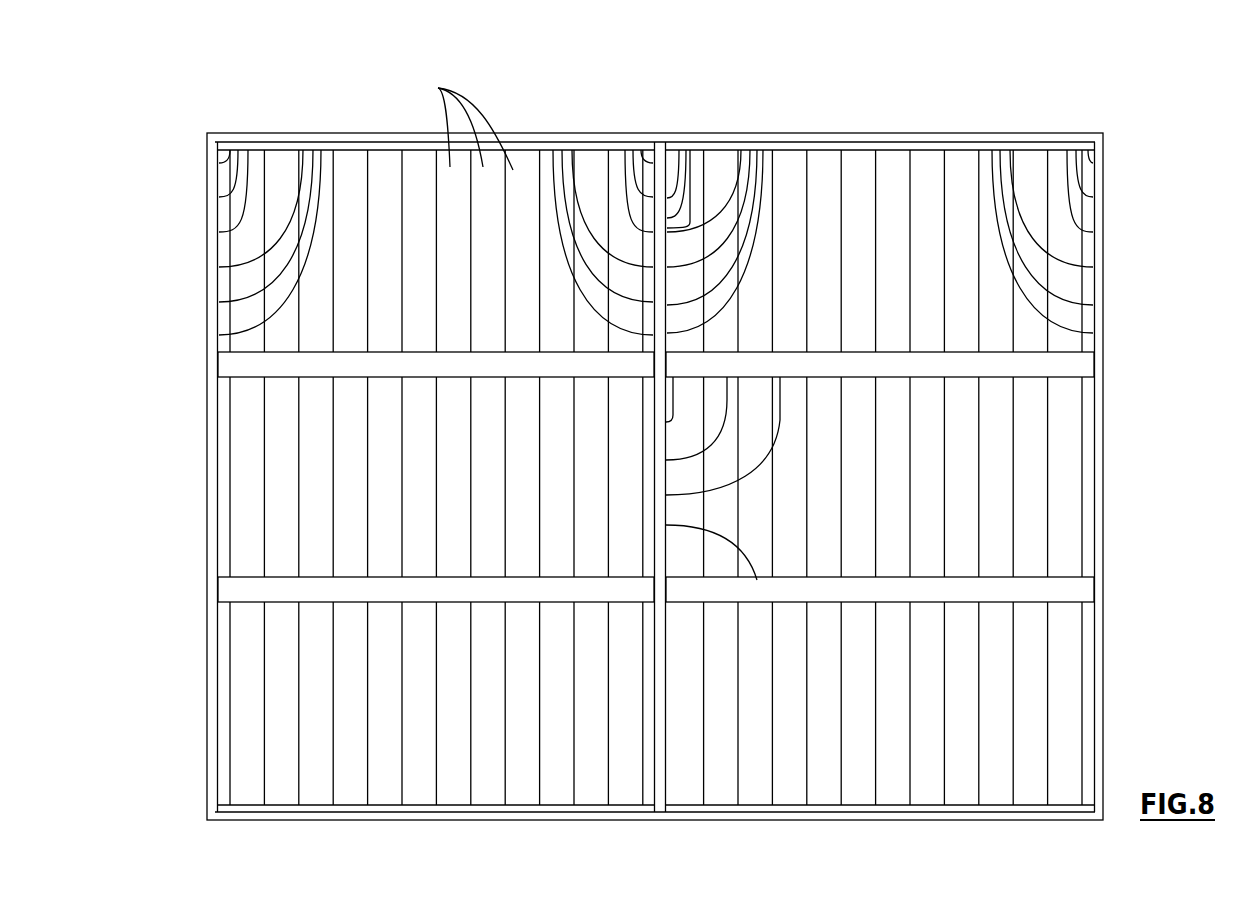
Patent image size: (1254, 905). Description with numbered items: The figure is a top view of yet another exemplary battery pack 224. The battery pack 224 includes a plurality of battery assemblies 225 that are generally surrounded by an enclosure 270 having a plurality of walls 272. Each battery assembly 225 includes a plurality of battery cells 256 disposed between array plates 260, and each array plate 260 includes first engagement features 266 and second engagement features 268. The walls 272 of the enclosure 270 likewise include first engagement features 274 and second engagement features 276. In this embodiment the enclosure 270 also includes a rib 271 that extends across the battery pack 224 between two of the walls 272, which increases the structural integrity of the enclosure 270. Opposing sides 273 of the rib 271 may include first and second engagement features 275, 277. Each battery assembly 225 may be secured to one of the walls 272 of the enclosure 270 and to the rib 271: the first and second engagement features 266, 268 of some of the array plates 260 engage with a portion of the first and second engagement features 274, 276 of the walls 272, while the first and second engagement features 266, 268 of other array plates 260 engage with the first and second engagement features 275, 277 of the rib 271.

The battery pack 224 is at (660, 80).
The battery assemblies 225 is at (384, 158).
The battery cells 256 is at (456, 122).
The array plates 260 is at (225, 150).
The first engagement features 266 is at (238, 150).
The second engagement features 268 is at (248, 150).
The enclosure 270 is at (826, 120).
The rib 271 is at (654, 363).
The walls 272 is at (207, 370).
The opposing sides 273 is at (654, 588).
The first engagement features 274 is at (207, 197).
The first engagement features 275 is at (690, 150).
The second engagement features 276 is at (207, 163).
The second engagement features 277 is at (741, 150).